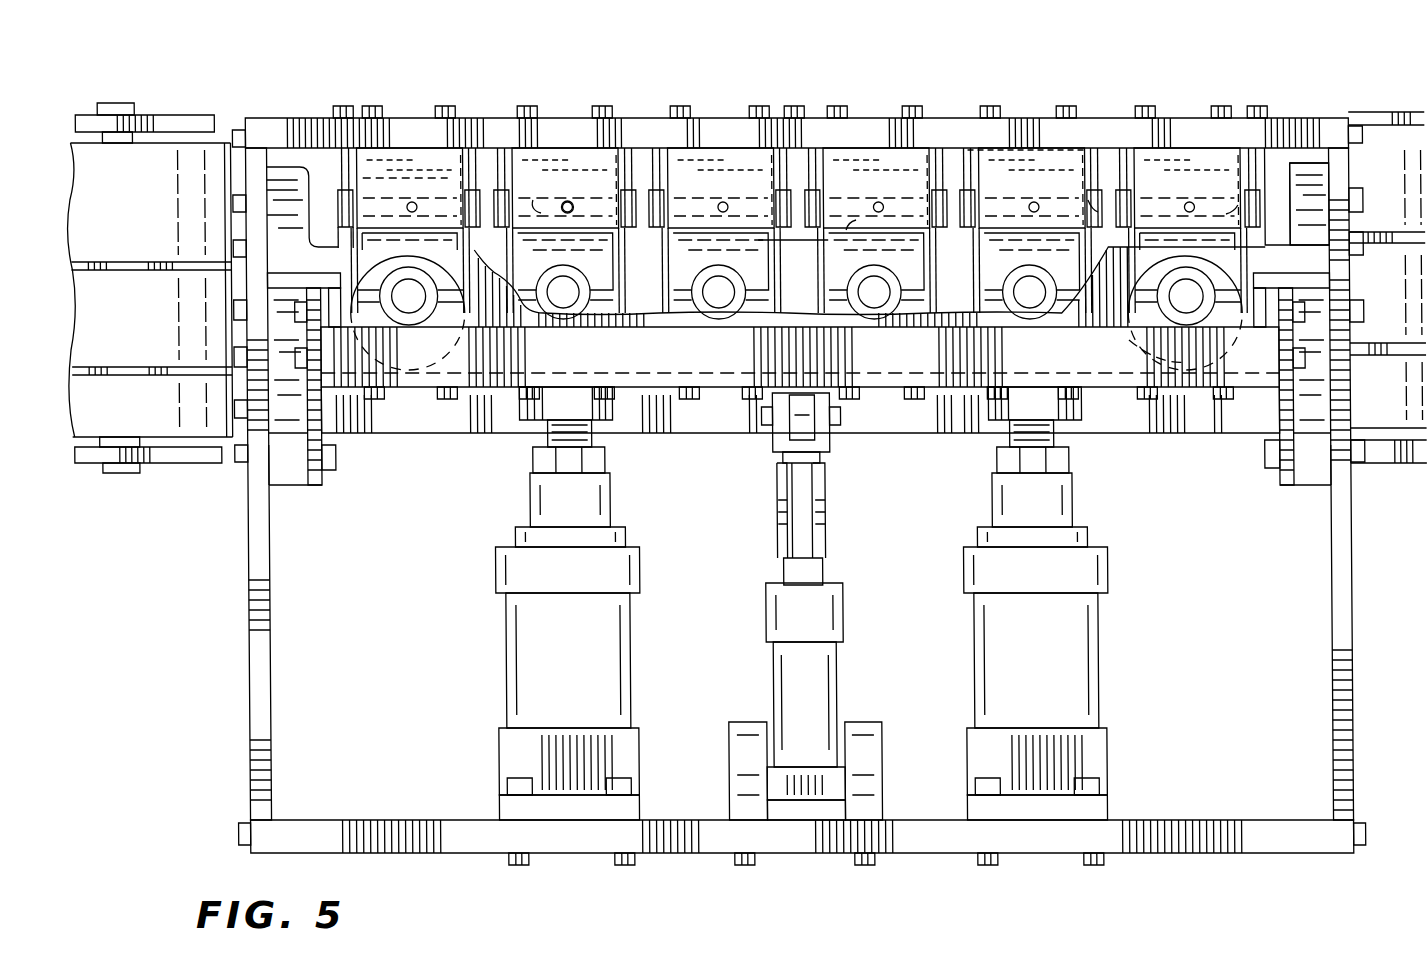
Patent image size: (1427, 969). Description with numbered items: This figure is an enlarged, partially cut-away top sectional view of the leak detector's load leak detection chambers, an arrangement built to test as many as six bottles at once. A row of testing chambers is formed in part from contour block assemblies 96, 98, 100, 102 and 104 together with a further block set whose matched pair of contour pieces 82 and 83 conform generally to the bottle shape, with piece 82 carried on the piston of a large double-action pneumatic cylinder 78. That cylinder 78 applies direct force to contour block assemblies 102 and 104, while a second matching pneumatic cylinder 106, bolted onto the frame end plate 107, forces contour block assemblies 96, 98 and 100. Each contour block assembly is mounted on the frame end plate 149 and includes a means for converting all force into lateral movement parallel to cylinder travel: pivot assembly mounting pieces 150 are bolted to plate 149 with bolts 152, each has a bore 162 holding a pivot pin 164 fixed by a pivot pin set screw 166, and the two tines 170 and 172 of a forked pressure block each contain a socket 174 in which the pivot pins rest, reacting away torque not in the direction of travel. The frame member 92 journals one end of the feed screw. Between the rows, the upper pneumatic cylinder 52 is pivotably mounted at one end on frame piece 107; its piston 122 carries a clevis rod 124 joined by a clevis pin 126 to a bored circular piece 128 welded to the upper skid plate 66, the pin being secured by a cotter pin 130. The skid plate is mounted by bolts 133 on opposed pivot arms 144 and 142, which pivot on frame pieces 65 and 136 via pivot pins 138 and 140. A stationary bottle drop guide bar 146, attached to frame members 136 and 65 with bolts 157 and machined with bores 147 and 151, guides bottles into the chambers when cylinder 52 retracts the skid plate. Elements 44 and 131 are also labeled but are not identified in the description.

The clamp module 44 is at (1158, 135).
The upper pneumatic cylinder 52 is at (820, 606).
The frame piece 65 is at (796, 466).
The upper skid plate 66 is at (418, 392).
The pneumatic cylinder 78 is at (1065, 647).
The contour block piece 82 is at (845, 310).
The contour block piece 83 is at (835, 243).
The frame member 92 is at (258, 118).
The contour block assembly 96 is at (414, 190).
The contour block assembly 98 is at (550, 165).
The contour block assembly 100 is at (714, 165).
The contour block assembly 102 is at (868, 160).
The contour block assembly 104 is at (1035, 165).
The pneumatic cylinder 106 is at (545, 676).
The frame end plate 107 is at (1208, 853).
The piston 122 is at (814, 515).
The clevis rod 124 is at (805, 420).
The clevis pin 126 is at (772, 440).
The bored circular piece 128 is at (819, 467).
The cotter pin 130 is at (835, 410).
The bolt 131 is at (296, 362).
The bolts 133 is at (296, 310).
The frame piece 136 is at (248, 668).
The pivot pin 138 is at (770, 425).
The pivot pin 140 is at (1263, 433).
The pivot arm 142 is at (1310, 468).
The pivot arm 144 is at (280, 468).
The bottle drop guide bar 146 is at (1318, 237).
The bore 147 is at (458, 318).
The end plate 149 is at (1307, 118).
The pivot assembly mounting piece 150 is at (384, 183).
The bore 151 is at (1140, 300).
The bolts 152 is at (1072, 118).
The bolts 157 is at (234, 205).
The bore 162 is at (555, 208).
The pivot pin 164 is at (852, 210).
The pivot pin set screw 166 is at (572, 203).
The tine 170 is at (344, 118).
The tine 172 is at (482, 188).
The socket 174 is at (1192, 130).